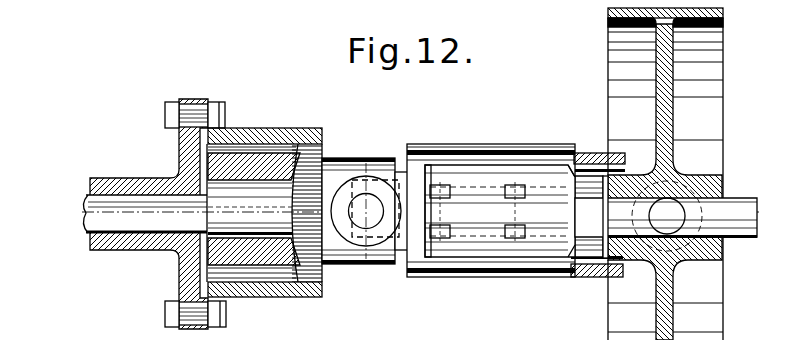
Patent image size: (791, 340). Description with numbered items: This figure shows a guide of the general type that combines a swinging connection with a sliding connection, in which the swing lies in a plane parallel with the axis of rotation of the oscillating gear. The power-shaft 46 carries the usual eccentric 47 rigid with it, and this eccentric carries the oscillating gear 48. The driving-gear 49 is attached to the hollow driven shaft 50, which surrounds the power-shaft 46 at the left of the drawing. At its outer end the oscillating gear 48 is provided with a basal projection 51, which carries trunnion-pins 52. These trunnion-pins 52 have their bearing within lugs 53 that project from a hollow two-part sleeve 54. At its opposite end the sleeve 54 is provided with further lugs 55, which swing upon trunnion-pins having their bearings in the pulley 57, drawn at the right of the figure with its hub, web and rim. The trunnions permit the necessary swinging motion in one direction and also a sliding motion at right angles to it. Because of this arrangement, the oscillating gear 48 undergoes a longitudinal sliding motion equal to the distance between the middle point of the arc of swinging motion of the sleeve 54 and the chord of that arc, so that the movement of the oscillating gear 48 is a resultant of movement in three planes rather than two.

The power-shaft 46 is at (80, 220).
The eccentric 47 is at (265, 213).
The oscillating gear 48 is at (326, 150).
The driving-gear 49 is at (268, 131).
The hollow driven shaft 50 is at (143, 178).
The basal projection 51 is at (368, 160).
The trunnion-pins 52 is at (366, 211).
The lugs 53 is at (376, 211).
The hollow two-part sleeve 54 is at (582, 210).
The lugs 55 is at (636, 175).
The pulley 57 is at (725, 134).